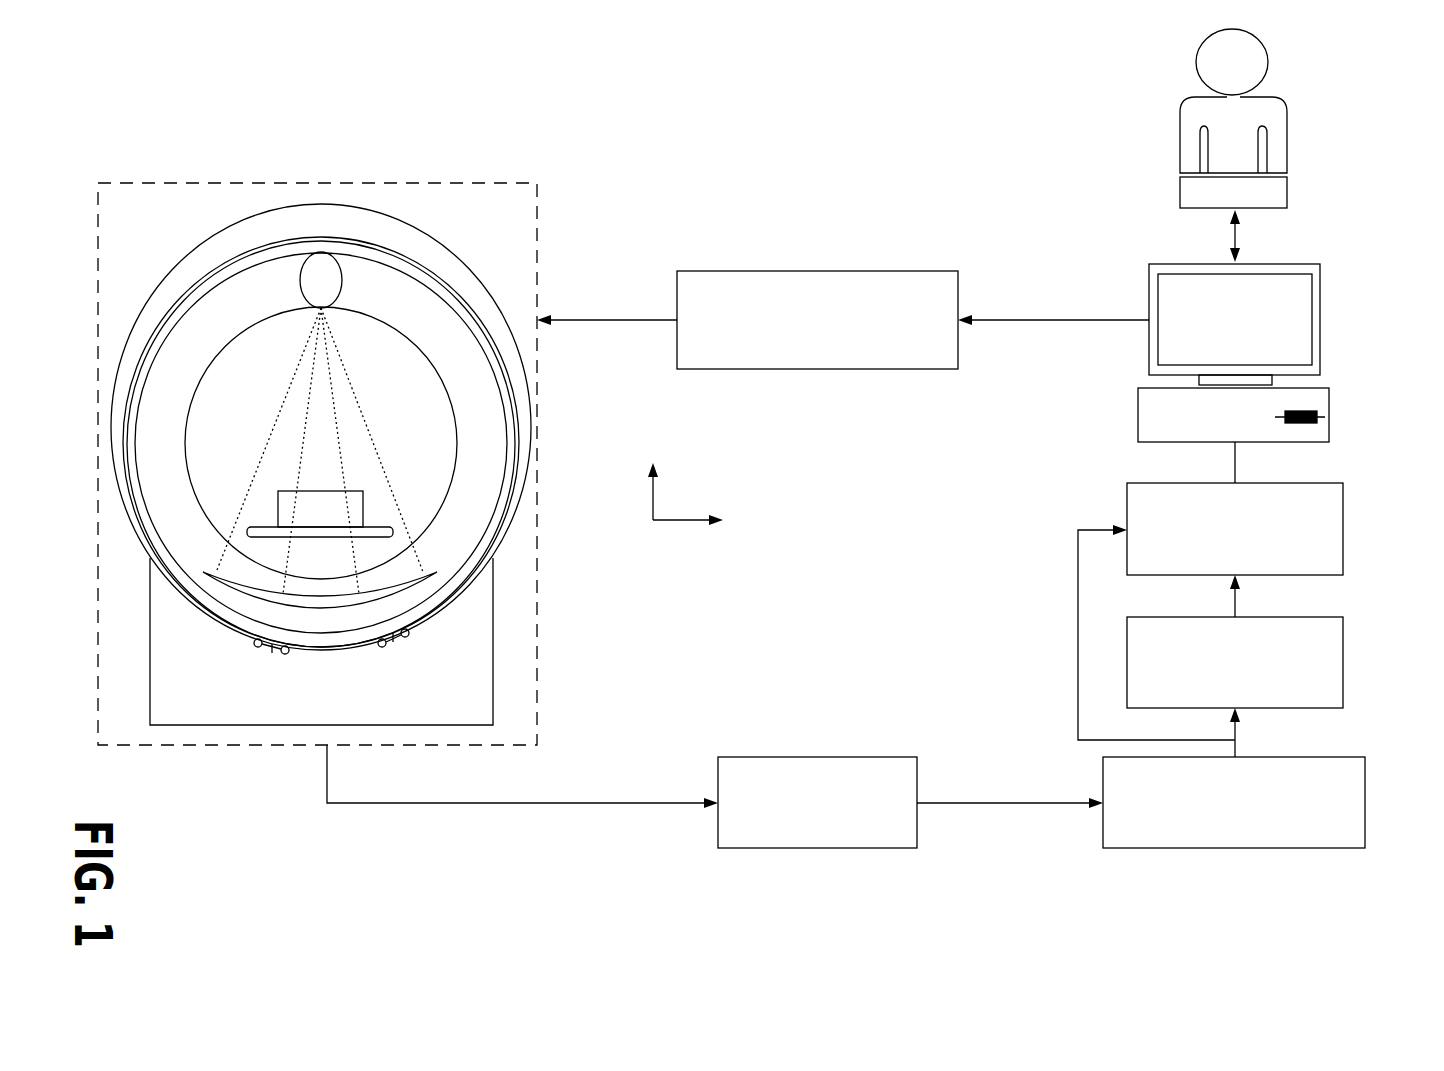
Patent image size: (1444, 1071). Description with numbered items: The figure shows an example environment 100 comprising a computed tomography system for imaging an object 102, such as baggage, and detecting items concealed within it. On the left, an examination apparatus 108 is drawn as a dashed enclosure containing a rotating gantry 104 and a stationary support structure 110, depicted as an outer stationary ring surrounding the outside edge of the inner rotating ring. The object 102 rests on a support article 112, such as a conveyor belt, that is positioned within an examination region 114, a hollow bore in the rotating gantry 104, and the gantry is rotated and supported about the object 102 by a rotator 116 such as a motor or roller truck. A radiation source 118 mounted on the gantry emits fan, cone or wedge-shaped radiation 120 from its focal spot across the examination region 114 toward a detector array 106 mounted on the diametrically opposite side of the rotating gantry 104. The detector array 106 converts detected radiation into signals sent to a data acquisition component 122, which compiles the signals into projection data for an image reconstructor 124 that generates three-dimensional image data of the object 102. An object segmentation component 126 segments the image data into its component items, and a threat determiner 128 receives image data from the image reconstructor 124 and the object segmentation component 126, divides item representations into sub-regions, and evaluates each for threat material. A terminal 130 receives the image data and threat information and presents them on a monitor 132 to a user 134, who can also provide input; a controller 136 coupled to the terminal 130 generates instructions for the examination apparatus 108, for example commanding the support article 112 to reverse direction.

The example environment 100 is at (188, 96).
The object 102 is at (318, 490).
The rotating gantry 104 is at (236, 255).
The detector array 106 is at (237, 600).
The examination apparatus 108 is at (537, 183).
The support structure 110 is at (432, 248).
The support article 112 is at (256, 527).
The examination region 114 is at (304, 437).
The rotator 116 is at (410, 633).
The radiation source 118 is at (339, 295).
The radiation 120 is at (283, 403).
The data acquisition component 122 is at (817, 848).
The image reconstructor 124 is at (1366, 757).
The object segmentation component 126 is at (1343, 617).
The threat determiner 128 is at (1343, 483).
The terminal 130 is at (1330, 388).
The monitor 132 is at (1320, 264).
The user 134 is at (1287, 112).
The controller 136 is at (818, 271).